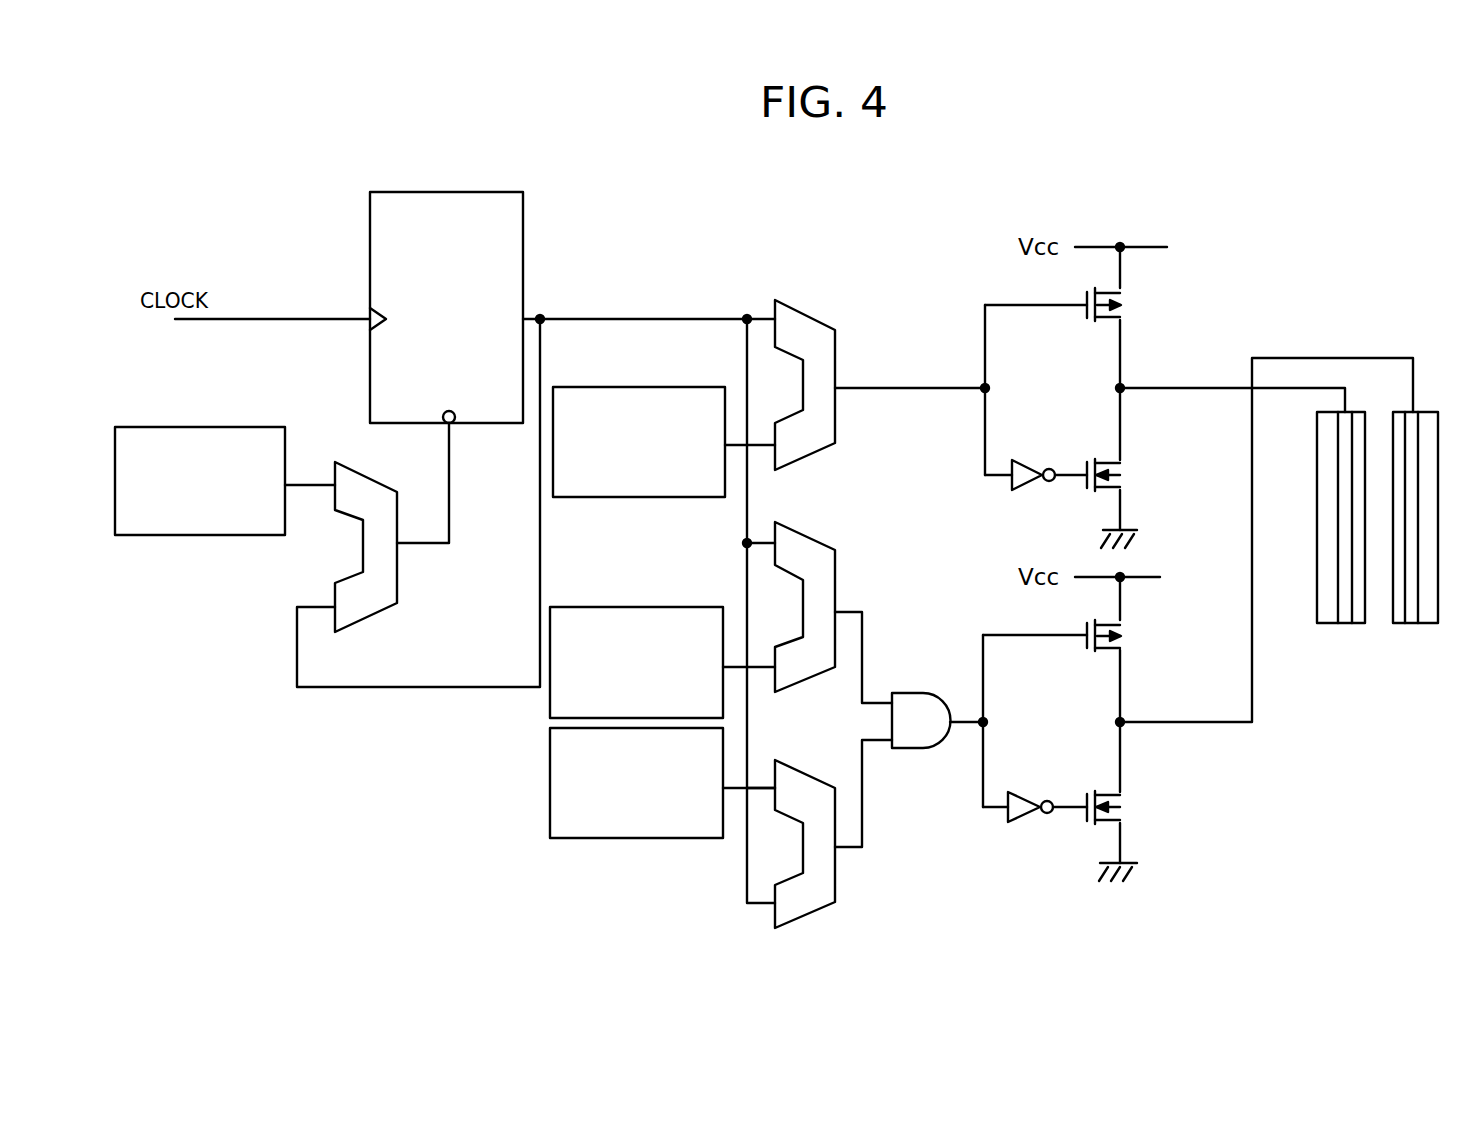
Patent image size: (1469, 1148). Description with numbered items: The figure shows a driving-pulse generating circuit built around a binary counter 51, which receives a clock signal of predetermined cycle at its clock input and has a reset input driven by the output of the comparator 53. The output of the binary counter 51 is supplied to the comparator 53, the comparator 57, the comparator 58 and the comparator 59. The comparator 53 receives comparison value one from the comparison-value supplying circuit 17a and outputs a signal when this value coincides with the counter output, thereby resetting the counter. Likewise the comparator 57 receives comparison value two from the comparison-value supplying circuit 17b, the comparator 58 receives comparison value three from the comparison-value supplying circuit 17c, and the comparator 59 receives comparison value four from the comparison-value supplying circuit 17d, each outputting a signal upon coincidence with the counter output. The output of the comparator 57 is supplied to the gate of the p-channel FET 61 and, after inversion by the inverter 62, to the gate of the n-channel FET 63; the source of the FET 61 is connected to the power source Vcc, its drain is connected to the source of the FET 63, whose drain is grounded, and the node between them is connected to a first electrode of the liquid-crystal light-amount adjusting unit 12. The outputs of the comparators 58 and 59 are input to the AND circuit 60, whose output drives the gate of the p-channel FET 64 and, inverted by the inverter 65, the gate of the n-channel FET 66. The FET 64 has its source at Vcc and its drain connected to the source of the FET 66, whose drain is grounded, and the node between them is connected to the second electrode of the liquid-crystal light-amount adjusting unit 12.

The binary counter 51 is at (477, 192).
The comparison-value supplying circuit 17a is at (246, 427).
The comparator 53 is at (384, 482).
The comparison-value supplying circuit 17b is at (688, 387).
The comparator 57 is at (804, 313).
The comparison-value supplying circuit 17c is at (688, 607).
The comparator 58 is at (814, 533).
The comparison-value supplying circuit 17d is at (677, 838).
The comparator 59 is at (810, 770).
The AND circuit 60 is at (918, 693).
The FET 61 is at (1122, 300).
The inverter 62 is at (1028, 463).
The FET 63 is at (1122, 472).
The FET 64 is at (1122, 630).
The inverter 65 is at (1026, 796).
The FET 66 is at (1122, 806).
The liquid-crystal light-amount adjusting unit 12 is at (1378, 656).